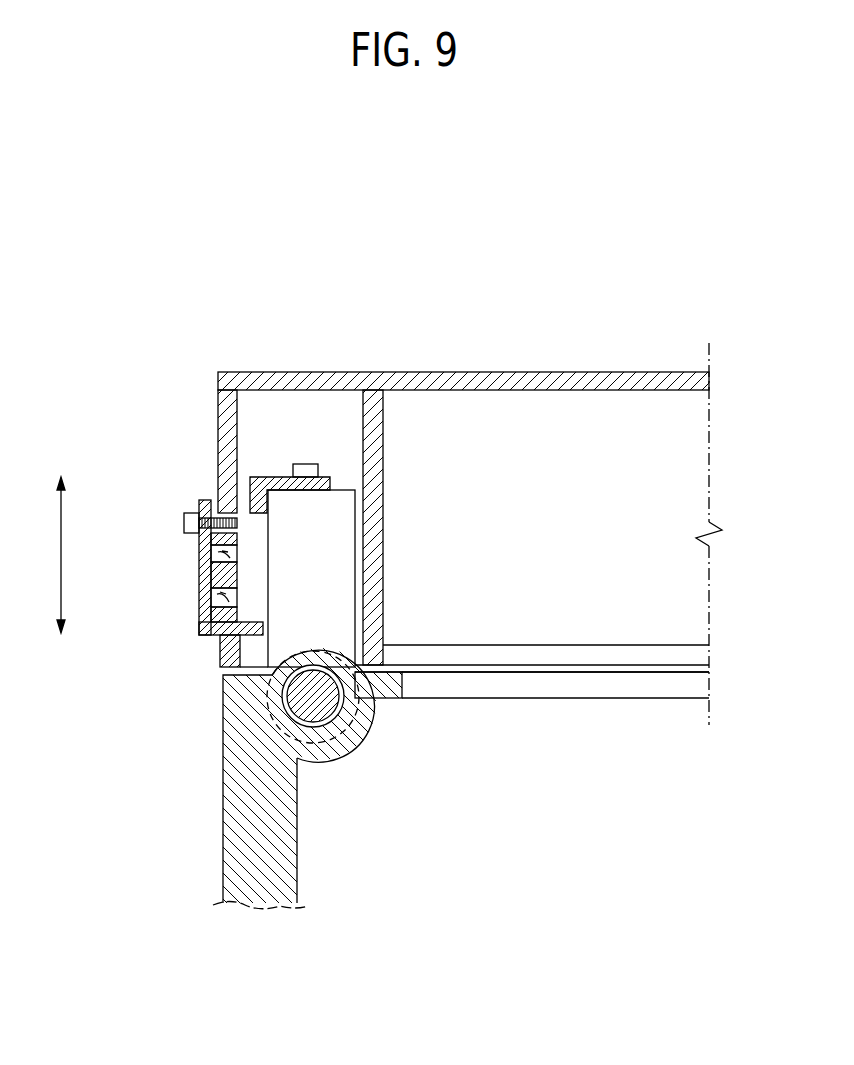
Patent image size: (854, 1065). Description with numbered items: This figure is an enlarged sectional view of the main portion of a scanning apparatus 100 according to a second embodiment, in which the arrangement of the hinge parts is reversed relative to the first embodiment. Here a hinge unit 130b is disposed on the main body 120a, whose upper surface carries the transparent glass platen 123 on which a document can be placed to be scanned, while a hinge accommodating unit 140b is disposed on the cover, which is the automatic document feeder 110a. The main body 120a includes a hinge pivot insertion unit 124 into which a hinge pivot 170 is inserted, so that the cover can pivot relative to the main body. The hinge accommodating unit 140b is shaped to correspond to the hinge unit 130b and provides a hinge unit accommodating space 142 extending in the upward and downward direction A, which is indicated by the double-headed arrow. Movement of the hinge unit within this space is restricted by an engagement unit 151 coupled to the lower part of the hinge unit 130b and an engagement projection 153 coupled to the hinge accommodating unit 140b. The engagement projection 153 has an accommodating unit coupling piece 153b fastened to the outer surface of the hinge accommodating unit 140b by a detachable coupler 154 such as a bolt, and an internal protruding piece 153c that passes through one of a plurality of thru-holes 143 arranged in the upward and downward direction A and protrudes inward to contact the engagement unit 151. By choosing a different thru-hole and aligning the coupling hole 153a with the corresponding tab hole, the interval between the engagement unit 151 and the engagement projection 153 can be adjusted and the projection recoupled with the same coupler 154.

The scanning apparatus 100 is at (613, 366).
The automatic document feeder 110a is at (430, 384).
The main body 120a is at (290, 863).
The platen 123 is at (578, 690).
The hinge pivot insertion unit 124 is at (312, 652).
The hinge unit 130b is at (343, 571).
The hinge accommodating unit 140b is at (255, 382).
The hinge unit accommodating space 142 is at (256, 438).
The thru-holes 143 is at (220, 645).
The engagement unit 151 is at (326, 478).
The engagement projection 153 is at (211, 552).
The coupling hole 153a is at (211, 580).
The accommodating unit coupling piece 153b is at (199, 504).
The internal protruding piece 153c is at (250, 630).
The coupler 154 is at (305, 466).
The hinge pivot 170 is at (345, 700).
The upward and downward direction A is at (52, 555).